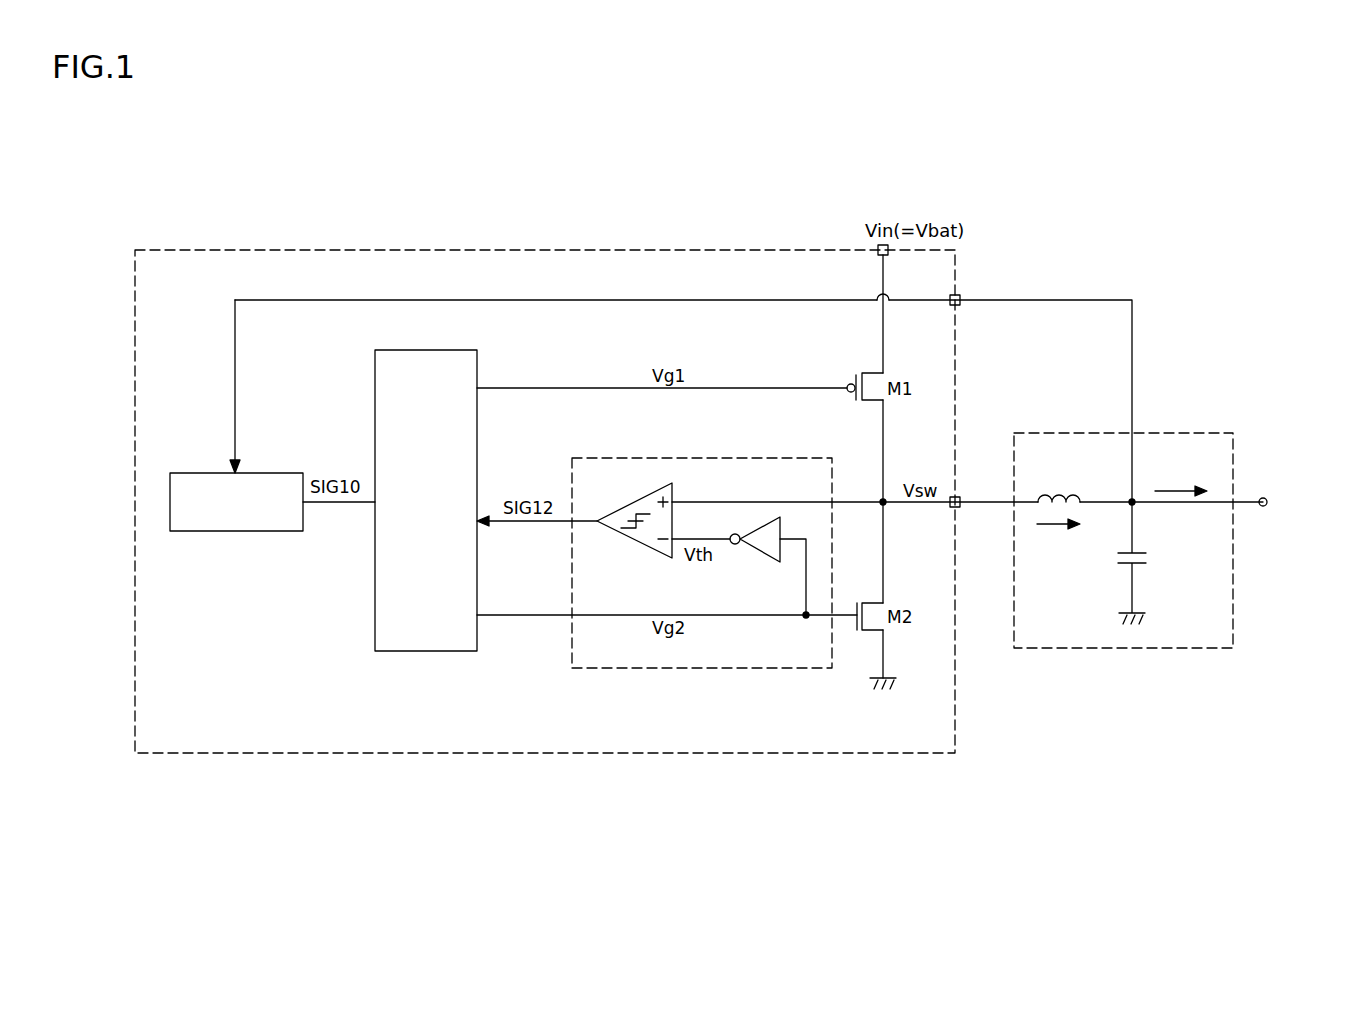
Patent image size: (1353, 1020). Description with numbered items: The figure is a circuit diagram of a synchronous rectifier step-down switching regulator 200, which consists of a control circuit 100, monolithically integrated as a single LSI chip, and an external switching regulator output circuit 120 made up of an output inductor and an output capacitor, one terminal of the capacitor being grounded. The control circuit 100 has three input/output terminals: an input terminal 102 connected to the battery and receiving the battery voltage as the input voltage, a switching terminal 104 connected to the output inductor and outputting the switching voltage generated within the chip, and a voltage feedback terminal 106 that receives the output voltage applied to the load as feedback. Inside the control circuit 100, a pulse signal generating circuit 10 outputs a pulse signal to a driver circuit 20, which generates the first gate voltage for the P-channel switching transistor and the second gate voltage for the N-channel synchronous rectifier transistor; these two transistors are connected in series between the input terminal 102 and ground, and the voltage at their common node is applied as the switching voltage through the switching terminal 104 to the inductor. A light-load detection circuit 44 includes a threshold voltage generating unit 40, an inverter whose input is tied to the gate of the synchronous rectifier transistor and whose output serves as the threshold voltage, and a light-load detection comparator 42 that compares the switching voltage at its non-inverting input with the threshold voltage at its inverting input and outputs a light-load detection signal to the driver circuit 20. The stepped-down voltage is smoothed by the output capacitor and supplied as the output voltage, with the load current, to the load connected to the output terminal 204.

The pulse signal generating circuit 10 is at (237, 531).
The driver circuit 20 is at (427, 651).
The threshold voltage generating unit 40 is at (762, 553).
The light-load detection comparator 42 is at (633, 541).
The light-load detection circuit 44 is at (700, 668).
The control circuit 100 is at (205, 753).
The input terminal 102 is at (878, 248).
The switching terminal 104 is at (957, 507).
The voltage feedback terminal 106 is at (957, 305).
The switching regulator output circuit 120 is at (1070, 648).
The step-down switching regulator 200 is at (742, 854).
The output terminal 204 is at (1264, 497).